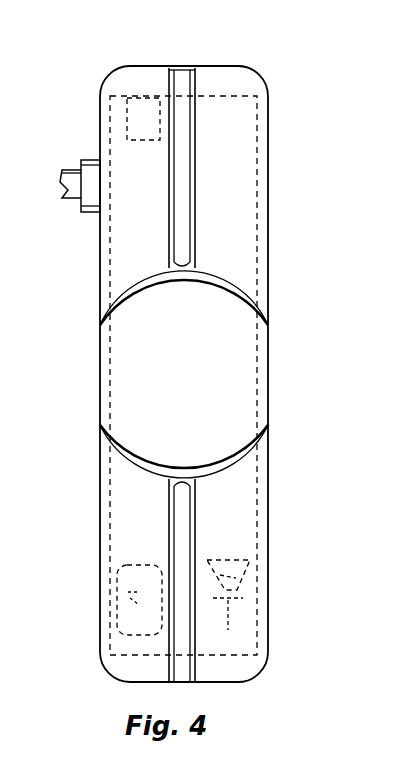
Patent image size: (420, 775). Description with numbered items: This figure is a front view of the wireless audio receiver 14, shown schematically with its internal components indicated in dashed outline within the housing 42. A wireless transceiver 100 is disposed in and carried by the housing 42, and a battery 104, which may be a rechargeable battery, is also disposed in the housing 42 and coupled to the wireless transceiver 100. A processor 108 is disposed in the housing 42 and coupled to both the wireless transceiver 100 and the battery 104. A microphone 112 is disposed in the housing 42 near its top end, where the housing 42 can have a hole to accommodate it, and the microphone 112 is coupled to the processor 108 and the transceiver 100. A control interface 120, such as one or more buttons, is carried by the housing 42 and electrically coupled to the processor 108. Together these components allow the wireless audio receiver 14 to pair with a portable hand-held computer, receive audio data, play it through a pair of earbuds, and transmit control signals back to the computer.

The wireless audio receiver 14 is at (193, 358).
The housing 42 is at (267, 281).
The wireless transceiver 100 is at (267, 570).
The battery 104 is at (100, 590).
The processor 108 is at (245, 128).
The microphone 112 is at (146, 102).
The control interface 120 is at (267, 208).